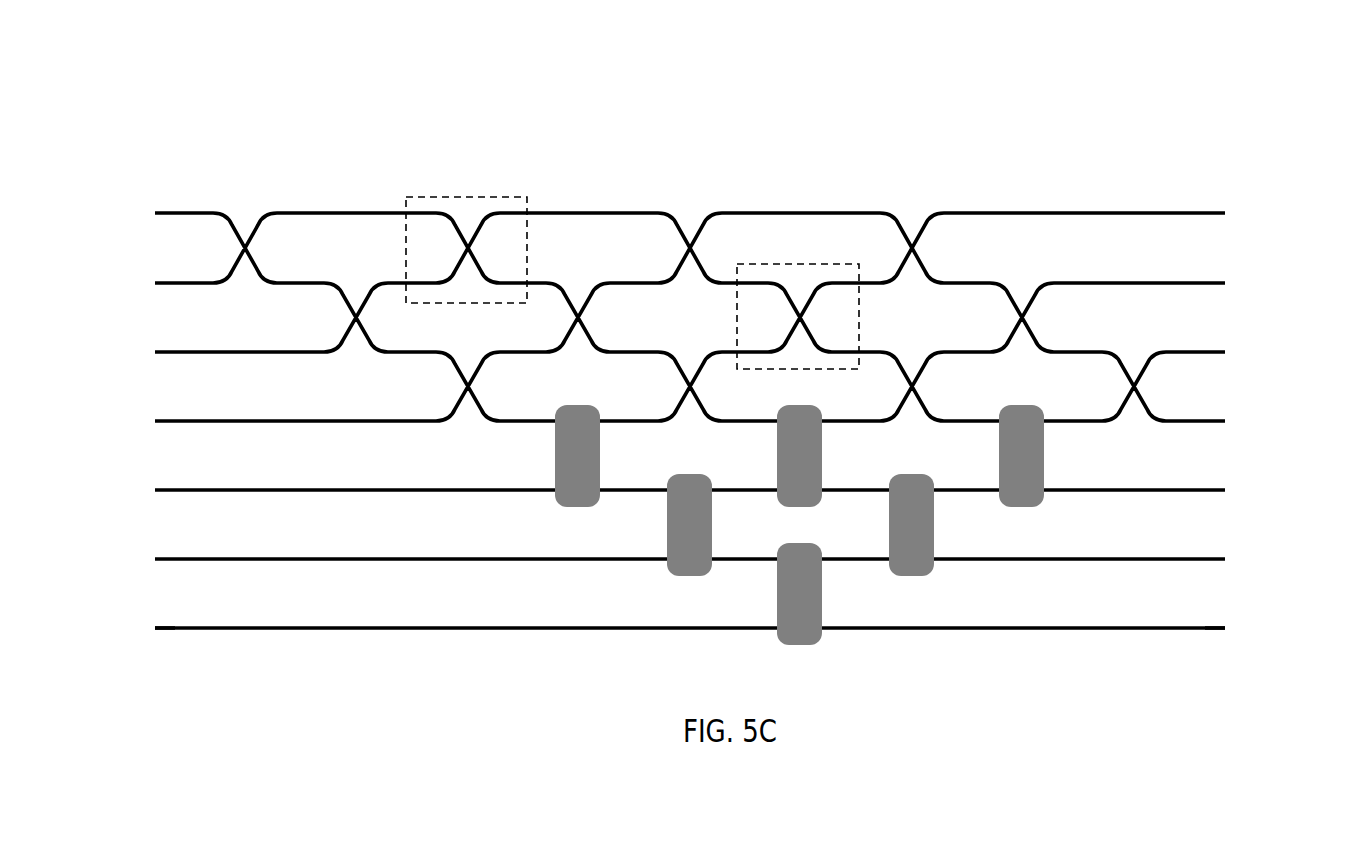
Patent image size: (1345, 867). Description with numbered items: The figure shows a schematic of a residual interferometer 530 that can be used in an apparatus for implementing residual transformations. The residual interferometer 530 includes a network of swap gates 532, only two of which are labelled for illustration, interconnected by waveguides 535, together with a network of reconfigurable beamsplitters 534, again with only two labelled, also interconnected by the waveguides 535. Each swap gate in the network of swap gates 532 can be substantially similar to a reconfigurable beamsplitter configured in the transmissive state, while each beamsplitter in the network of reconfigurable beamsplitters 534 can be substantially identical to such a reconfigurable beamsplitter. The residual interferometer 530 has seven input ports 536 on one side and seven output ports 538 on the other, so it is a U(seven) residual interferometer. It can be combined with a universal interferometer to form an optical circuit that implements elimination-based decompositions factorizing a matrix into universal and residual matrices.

The residual interferometer 530 is at (685, 394).
The swap gates 532 is at (783, 255).
The reconfigurable beamsplitters 534 is at (658, 535).
The waveguides 535 is at (190, 362).
The input ports 536 is at (168, 642).
The output ports 538 is at (1207, 635).